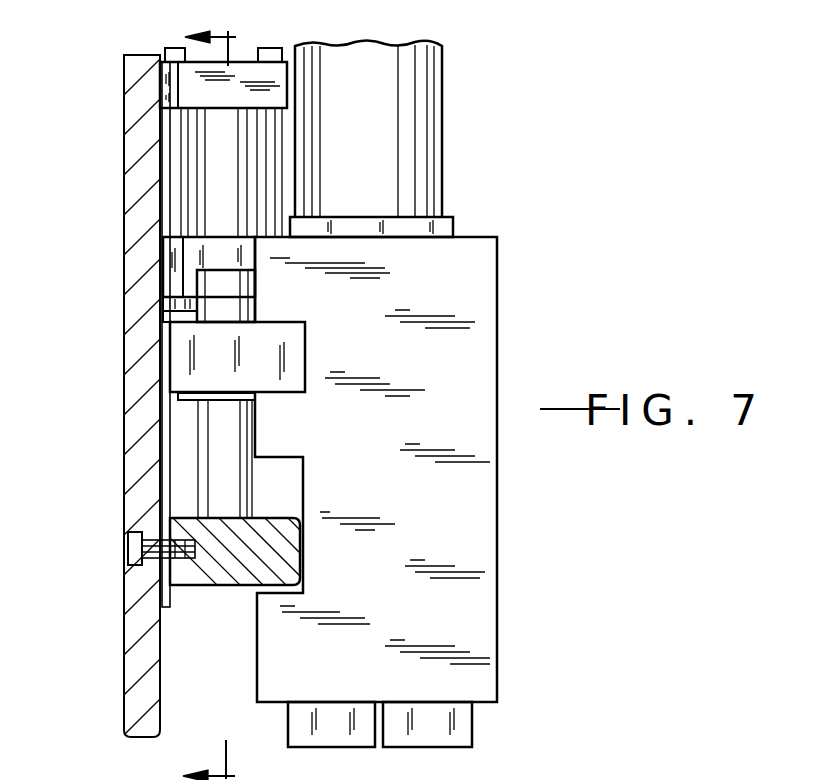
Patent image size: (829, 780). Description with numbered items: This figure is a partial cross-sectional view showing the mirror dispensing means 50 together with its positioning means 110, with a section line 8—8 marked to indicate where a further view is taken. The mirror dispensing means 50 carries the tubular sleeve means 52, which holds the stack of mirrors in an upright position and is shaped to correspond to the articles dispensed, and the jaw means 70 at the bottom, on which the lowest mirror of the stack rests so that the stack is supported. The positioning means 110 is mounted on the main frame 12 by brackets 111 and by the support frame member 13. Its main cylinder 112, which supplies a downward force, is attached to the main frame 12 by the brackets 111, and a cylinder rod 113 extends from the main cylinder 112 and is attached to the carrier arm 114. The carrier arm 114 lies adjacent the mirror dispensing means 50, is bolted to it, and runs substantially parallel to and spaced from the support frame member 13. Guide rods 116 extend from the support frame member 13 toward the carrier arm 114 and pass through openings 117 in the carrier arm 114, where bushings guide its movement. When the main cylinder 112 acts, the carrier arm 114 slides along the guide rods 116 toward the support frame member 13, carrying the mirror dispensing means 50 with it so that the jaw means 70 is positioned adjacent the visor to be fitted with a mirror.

The section line 8- 8 is at (184, 403).
The main frame 12 is at (140, 655).
The support frame member 13 is at (177, 565).
The mirror dispensing means 50 is at (376, 469).
The sleeve means 52 is at (371, 138).
The jaw means 70 is at (438, 715).
The positioning means 110 is at (108, 388).
The brackets 111 is at (158, 88).
The main cylinder 112 is at (165, 160).
The cylinder rod 113 is at (168, 318).
The carrier arm 114 is at (265, 335).
The guide rods 116 is at (232, 483).
The openings 117 is at (255, 402).